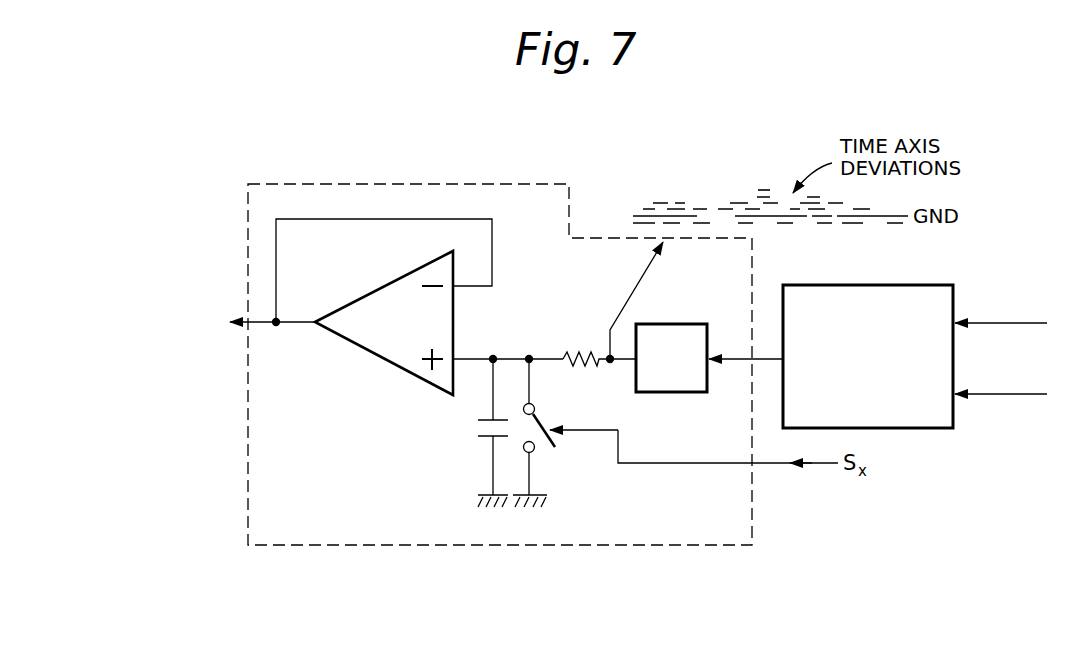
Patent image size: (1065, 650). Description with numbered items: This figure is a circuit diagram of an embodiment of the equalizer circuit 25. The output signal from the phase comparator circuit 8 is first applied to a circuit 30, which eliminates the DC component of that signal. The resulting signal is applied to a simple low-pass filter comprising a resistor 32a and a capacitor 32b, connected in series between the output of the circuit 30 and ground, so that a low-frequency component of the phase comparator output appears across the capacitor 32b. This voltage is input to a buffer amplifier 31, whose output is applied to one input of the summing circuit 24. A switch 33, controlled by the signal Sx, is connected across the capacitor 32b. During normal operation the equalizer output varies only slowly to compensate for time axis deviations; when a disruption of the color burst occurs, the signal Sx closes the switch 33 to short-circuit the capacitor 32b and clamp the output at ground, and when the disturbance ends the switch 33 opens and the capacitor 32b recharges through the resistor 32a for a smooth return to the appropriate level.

The phase comparator circuit 8 is at (953, 299).
The summing circuit 24 is at (183, 335).
The equalizer circuit 25 is at (460, 545).
The circuit 30 is at (682, 324).
The buffer amplifier 31 is at (382, 362).
The resistor 32a is at (566, 352).
The capacitor 32b is at (478, 428).
The switch 33 is at (544, 445).